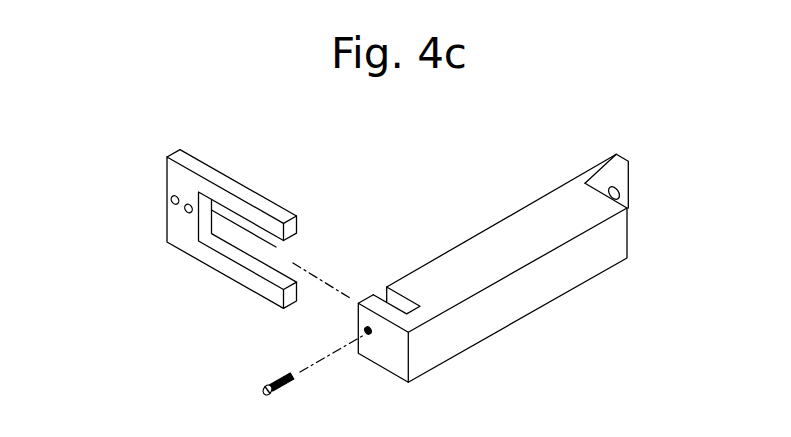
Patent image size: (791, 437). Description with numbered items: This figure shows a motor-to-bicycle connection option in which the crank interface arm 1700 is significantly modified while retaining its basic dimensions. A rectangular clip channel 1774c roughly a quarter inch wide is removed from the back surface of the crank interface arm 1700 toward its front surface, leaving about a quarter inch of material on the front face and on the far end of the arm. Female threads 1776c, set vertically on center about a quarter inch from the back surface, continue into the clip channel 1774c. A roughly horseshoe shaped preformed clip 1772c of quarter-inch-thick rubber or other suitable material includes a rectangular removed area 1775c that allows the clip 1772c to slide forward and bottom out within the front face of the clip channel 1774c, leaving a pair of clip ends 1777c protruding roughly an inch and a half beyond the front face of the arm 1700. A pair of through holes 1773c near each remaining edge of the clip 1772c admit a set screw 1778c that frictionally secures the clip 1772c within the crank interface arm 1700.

The crank interface arm 1700 is at (493, 268).
The preformed clip 1772c is at (198, 158).
The through holes 1773c is at (175, 196).
The rectangular clip channel 1774c is at (407, 300).
The rectangular removed area 1775c is at (284, 240).
The female threads 1776c is at (369, 331).
The clip ends 1777c is at (268, 296).
The set screw 1778c is at (278, 381).